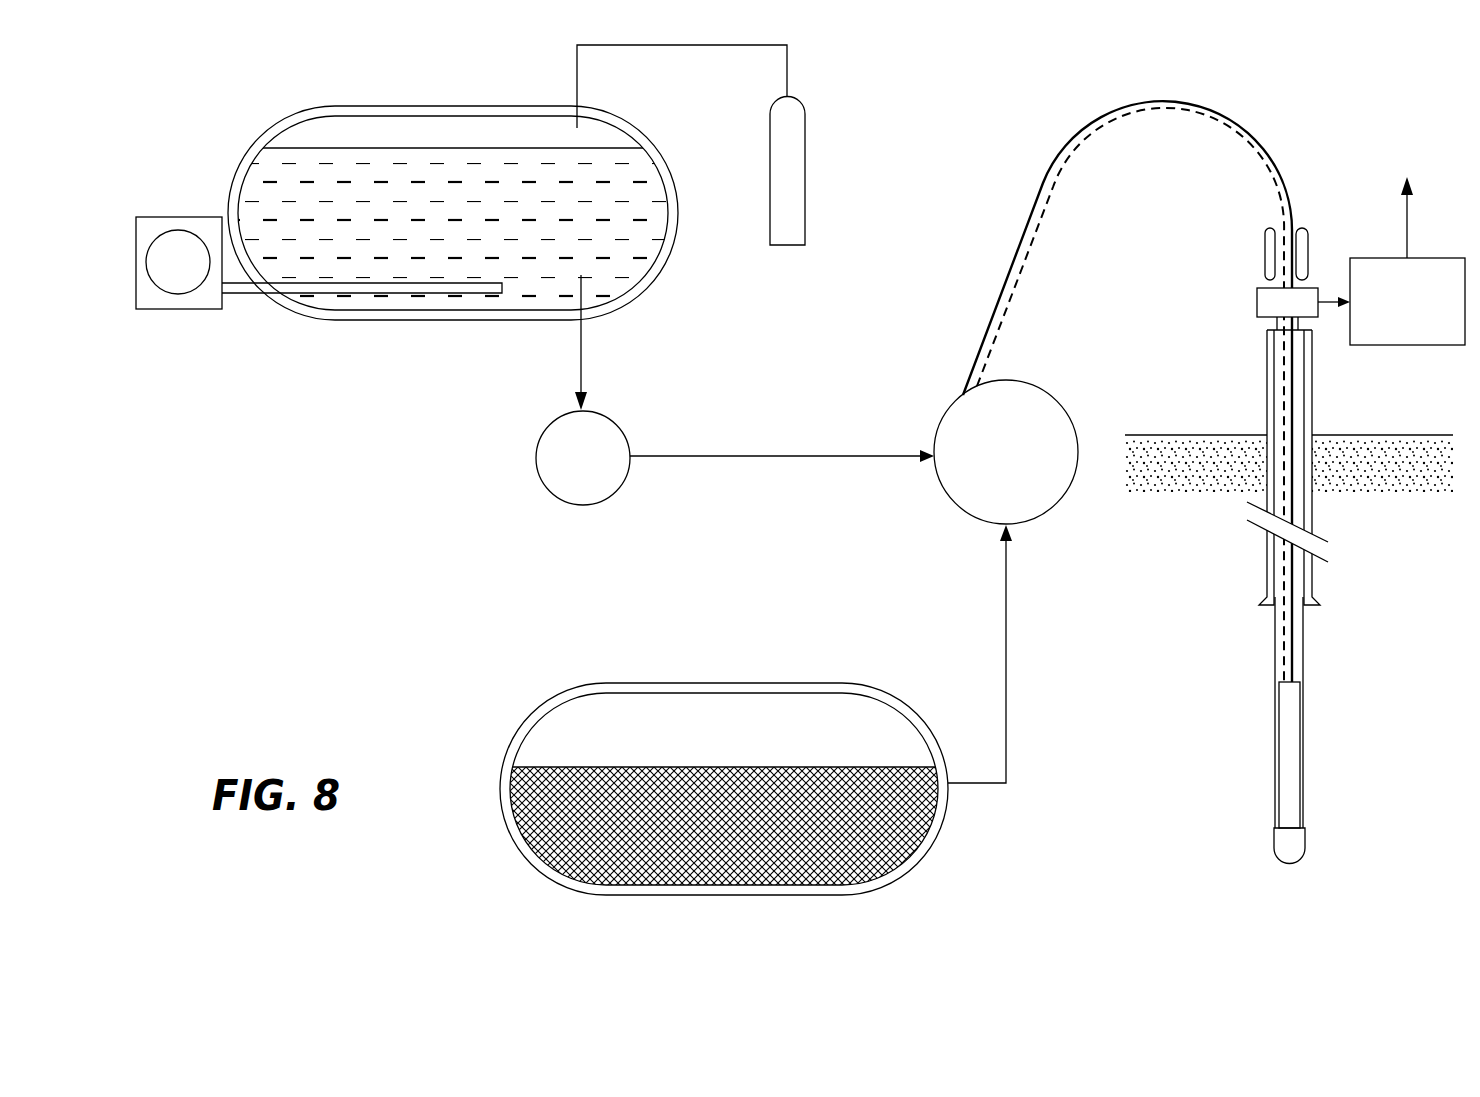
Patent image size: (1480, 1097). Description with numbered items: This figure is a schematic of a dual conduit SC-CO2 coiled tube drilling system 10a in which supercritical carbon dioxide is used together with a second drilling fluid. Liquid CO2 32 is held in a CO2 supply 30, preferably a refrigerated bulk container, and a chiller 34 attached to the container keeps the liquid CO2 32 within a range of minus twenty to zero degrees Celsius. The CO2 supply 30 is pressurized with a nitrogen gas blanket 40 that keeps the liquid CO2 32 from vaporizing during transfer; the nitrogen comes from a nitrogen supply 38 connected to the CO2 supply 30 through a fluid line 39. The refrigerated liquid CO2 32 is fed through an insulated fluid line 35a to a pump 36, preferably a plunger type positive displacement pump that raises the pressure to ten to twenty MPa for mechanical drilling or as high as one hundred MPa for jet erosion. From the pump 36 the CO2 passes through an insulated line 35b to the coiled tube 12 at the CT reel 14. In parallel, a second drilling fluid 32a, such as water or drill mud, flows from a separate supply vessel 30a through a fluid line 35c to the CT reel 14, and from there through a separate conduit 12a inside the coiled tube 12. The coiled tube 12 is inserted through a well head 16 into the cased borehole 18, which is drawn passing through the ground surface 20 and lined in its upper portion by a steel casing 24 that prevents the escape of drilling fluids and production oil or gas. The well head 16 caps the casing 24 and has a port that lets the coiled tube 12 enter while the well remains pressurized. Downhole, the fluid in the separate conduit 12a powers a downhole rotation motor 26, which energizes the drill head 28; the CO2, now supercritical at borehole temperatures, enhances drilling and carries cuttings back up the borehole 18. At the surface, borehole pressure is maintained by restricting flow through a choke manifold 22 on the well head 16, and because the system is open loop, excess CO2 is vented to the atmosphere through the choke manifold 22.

The SC-CO2 CT drilling system 10a is at (480, 600).
The coiled tube 12 is at (1257, 143).
The separate conduit 12a is at (1210, 125).
The CT reel 14 is at (1064, 408).
The well head 16 is at (1262, 287).
The cased borehole 18 is at (1277, 403).
The ground surface 20 is at (1360, 433).
The choke manifold 22 is at (1407, 347).
The steel casing 24 is at (1312, 512).
The downhole rotation motor 26 is at (1301, 750).
The drill head 28 is at (1273, 850).
The CO2 supply 30 is at (276, 124).
The separate supply vessel 30a is at (835, 686).
The liquid CO2 32 is at (355, 157).
The second drilling fluid 32a is at (607, 767).
The chiller 34 is at (202, 310).
The insulated fluid line 35a is at (585, 365).
The insulated line 35b is at (790, 458).
The fluid line 35c is at (1018, 783).
The pump 36 is at (537, 458).
The nitrogen supply 38 is at (800, 107).
The fluid line 39 is at (728, 45).
The nitrogen gas blanket 40 is at (473, 132).